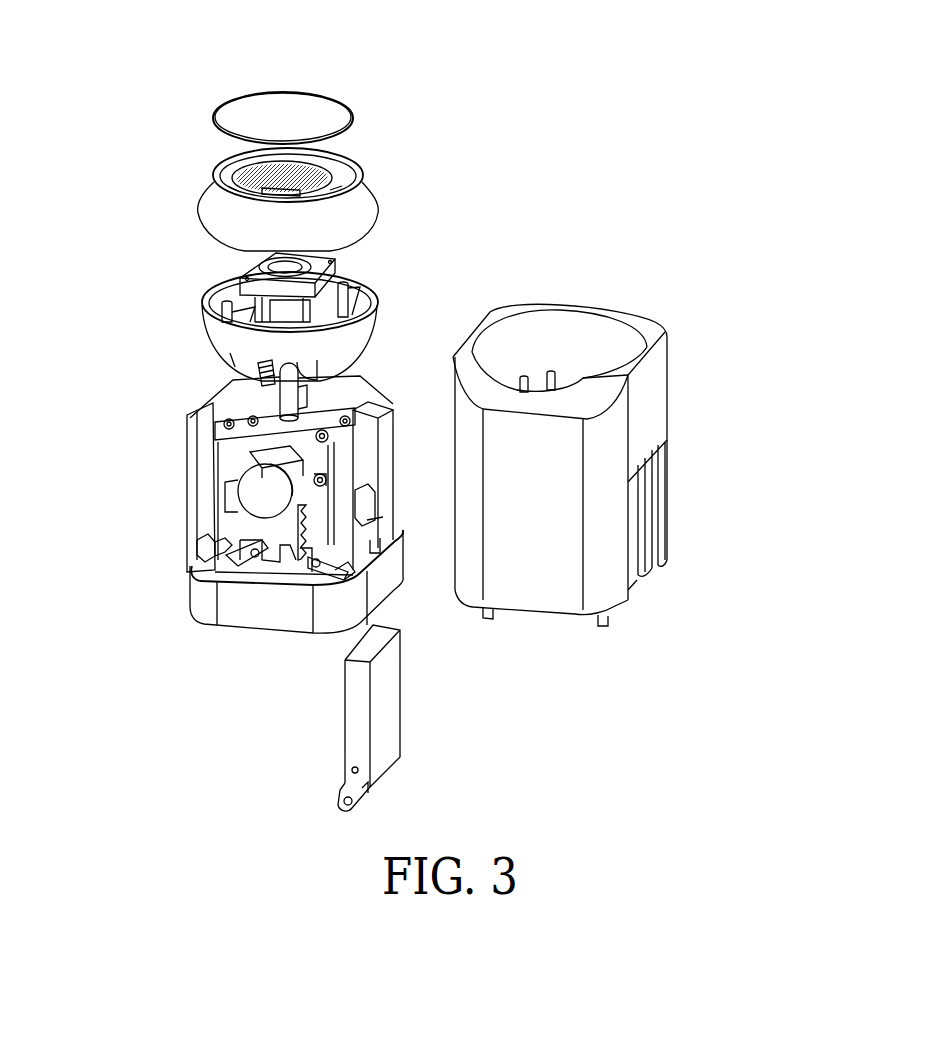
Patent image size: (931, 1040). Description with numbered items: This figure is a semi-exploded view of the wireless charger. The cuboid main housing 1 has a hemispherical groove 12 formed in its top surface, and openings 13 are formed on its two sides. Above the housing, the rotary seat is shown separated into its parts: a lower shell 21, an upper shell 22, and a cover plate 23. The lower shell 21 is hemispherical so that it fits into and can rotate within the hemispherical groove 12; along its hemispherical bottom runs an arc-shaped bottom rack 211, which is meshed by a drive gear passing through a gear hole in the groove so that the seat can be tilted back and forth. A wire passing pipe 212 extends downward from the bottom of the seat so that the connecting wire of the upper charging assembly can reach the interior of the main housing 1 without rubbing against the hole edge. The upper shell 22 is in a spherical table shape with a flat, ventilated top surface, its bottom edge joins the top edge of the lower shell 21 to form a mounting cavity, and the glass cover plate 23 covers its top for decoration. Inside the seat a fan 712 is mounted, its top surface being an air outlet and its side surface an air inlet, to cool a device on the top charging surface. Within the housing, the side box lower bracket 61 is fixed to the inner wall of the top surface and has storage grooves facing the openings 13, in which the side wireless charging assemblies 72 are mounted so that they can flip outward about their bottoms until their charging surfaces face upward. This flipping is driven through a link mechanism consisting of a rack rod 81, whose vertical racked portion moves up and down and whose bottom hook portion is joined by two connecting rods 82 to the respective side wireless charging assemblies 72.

The main housing 1 is at (648, 422).
The hemispherical groove 12 is at (590, 338).
The openings 13 is at (650, 527).
The lower shell 21 is at (260, 353).
The bottom rack 211 is at (268, 382).
The wire passing pipe 212 is at (290, 397).
The upper shell 22 is at (265, 215).
The cover plate 23 is at (320, 122).
The side box lower bracket 61 is at (367, 497).
The fan 712 is at (280, 292).
The side wireless charging assemblies 72 is at (193, 482).
The rack rod 81 is at (290, 572).
The connecting rods 82 is at (197, 553).